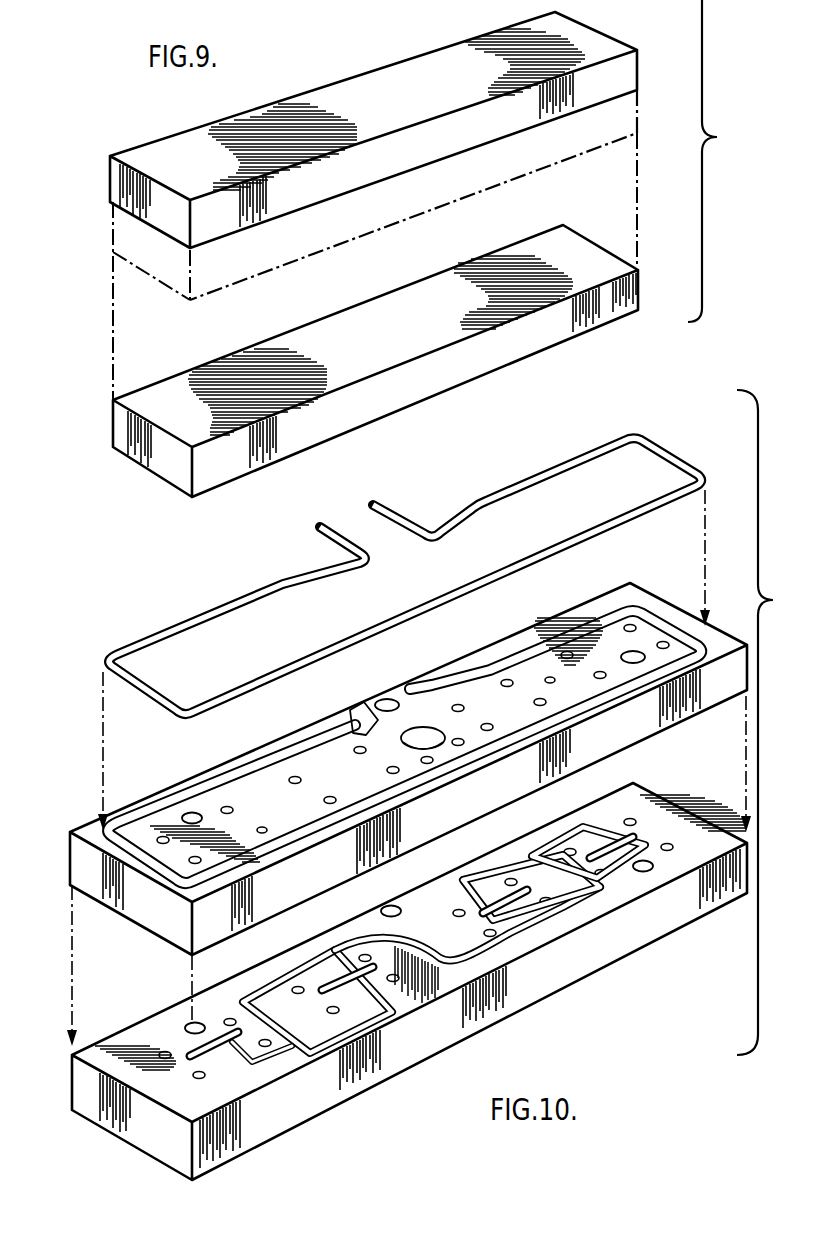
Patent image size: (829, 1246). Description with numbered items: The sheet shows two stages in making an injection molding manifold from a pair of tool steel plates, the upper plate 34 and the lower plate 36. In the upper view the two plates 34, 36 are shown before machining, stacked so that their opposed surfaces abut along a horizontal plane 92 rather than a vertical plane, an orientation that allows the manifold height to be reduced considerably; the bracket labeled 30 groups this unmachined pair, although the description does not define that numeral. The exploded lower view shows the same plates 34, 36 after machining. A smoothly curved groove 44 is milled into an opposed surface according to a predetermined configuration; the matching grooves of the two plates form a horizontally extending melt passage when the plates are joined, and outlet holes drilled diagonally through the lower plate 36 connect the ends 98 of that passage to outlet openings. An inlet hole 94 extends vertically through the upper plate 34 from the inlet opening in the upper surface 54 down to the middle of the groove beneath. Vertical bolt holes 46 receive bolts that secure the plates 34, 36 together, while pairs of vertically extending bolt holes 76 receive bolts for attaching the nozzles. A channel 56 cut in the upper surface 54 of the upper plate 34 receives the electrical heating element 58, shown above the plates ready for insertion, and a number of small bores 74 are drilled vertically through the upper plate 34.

In FIG. 9, the heat exchanger block 30 is at (640, 62).
In FIG. 9, the horizontal plane 92 is at (152, 232).
In FIG. 10, the electrical heating element 58 is at (665, 448).
In FIG. 10, the upper plate 34 is at (75, 858).
In FIG. 10, the lower plate 36 is at (95, 1103).
In FIG. 10, the upper surface 54 is at (600, 642).
In FIG. 10, the small bores 74 is at (546, 678).
In FIG. 10, the inlet hole 94 is at (412, 730).
In FIG. 10, the channel 56 is at (293, 759).
In FIG. 10, the bolt holes 46 is at (184, 814).
In FIG. 10, the bolt holes 76 is at (227, 806).
In FIG. 10, the ends 98 is at (503, 907).
In FIG. 10, the groove 44 is at (265, 1065).